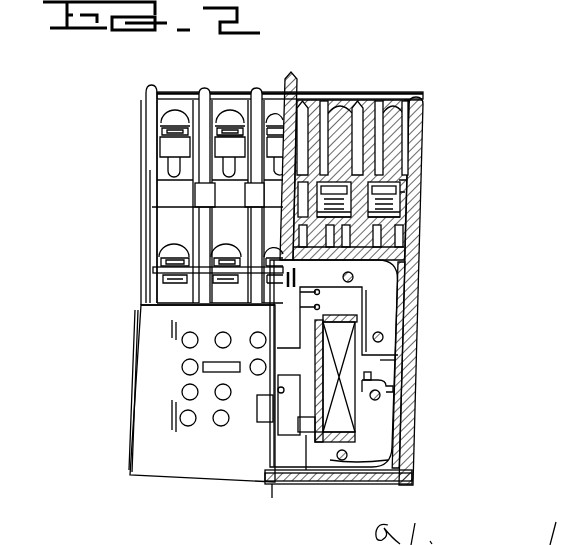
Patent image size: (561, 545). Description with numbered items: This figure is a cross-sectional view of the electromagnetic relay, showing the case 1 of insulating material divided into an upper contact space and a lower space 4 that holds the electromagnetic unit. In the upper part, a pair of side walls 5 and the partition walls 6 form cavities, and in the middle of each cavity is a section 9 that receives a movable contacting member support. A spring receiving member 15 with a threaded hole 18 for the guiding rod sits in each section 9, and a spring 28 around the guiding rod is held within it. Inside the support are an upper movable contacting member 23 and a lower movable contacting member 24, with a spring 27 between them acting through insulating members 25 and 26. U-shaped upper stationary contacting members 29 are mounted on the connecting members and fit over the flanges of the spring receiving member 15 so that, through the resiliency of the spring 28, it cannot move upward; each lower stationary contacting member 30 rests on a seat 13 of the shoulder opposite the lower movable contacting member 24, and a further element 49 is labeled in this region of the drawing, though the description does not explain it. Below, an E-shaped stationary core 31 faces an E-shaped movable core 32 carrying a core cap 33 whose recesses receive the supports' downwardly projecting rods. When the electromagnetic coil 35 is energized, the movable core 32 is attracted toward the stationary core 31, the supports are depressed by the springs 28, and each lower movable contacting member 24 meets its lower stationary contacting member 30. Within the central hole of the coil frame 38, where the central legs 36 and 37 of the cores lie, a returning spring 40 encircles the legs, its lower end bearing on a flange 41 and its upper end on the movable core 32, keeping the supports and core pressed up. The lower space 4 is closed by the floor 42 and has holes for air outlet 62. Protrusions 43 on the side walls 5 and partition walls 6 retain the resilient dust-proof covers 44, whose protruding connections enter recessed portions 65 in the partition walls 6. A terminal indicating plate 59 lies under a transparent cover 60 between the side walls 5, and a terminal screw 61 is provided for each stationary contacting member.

The case 1 is at (309, 283).
The lower space 4 is at (382, 363).
The side walls 5 is at (153, 103).
The partition walls 6 is at (205, 90).
The section for receiving a movable contacting member support 9 is at (349, 160).
The seats 13 is at (172, 278).
The spring receiving member 15 is at (300, 98).
The threaded hole 18 is at (383, 106).
The upper movable contacting member 23 is at (418, 181).
The lower movable contacting member 24 is at (403, 235).
The insulating member 25 is at (392, 202).
The insulating member 26 is at (398, 216).
The spring 27 is at (402, 190).
The spring 28 is at (330, 107).
The upper stationary contacting member 29 is at (170, 137).
The lower stationary contacting member 30 is at (170, 270).
The stationary core 31 is at (388, 434).
The movable core 32 is at (392, 283).
The core cap 33 is at (372, 258).
The electromagnetic coil 35 is at (349, 382).
The central leg 36 is at (285, 398).
The central leg 37 is at (296, 329).
The coil frame 38 is at (320, 403).
The returning spring 40 is at (320, 440).
The flanges 41 is at (306, 445).
The floor 42 is at (279, 486).
The protrusion 43 is at (160, 122).
The dust-proof cover 44 is at (165, 183).
The lower contact dome 49 is at (167, 252).
The terminal indicating plate 59 is at (417, 100).
The transparent cover 60 is at (174, 92).
The terminal screw 61 is at (230, 112).
The holes for air outlet 62 is at (183, 364).
The recessed portions 65 is at (200, 184).